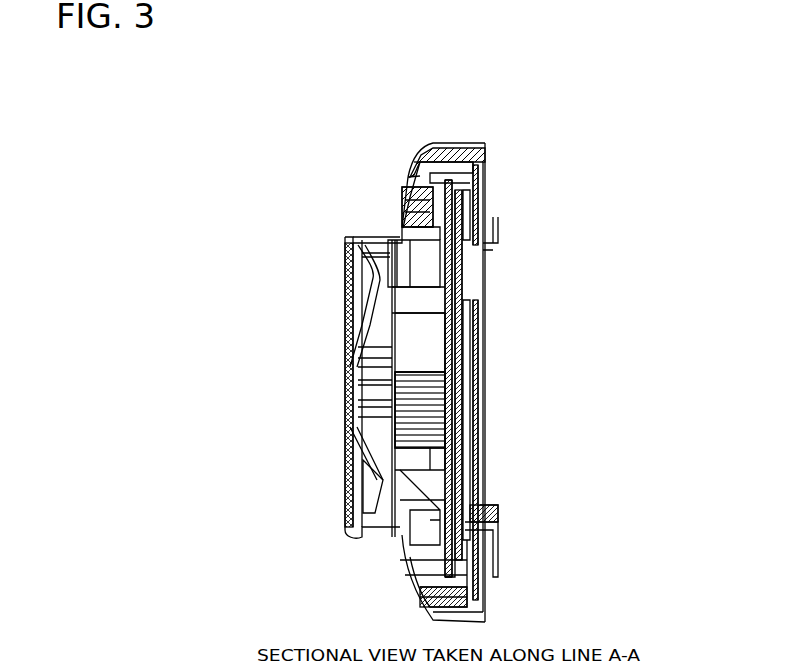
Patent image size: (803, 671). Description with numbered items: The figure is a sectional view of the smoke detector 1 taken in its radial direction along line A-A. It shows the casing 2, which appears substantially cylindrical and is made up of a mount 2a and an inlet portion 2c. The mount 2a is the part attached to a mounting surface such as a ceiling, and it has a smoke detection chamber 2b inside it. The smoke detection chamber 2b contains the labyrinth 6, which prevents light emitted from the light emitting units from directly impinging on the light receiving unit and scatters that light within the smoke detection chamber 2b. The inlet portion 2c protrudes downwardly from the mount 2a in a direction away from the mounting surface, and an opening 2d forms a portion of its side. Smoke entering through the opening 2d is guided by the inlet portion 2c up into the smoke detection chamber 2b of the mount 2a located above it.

The smoke detector 1 is at (593, 83).
The casing 2 is at (510, 137).
The mount 2a is at (487, 417).
The smoke detection chamber 2b is at (432, 338).
The inlet portion 2c is at (340, 317).
The opening 2d is at (373, 232).
The labyrinth 6 is at (342, 403).